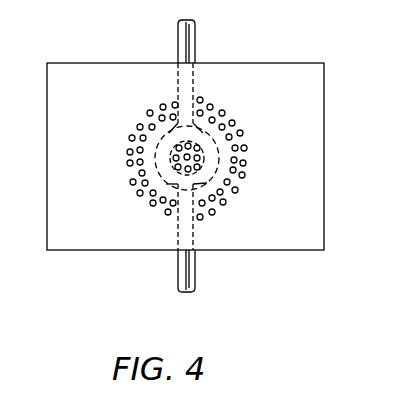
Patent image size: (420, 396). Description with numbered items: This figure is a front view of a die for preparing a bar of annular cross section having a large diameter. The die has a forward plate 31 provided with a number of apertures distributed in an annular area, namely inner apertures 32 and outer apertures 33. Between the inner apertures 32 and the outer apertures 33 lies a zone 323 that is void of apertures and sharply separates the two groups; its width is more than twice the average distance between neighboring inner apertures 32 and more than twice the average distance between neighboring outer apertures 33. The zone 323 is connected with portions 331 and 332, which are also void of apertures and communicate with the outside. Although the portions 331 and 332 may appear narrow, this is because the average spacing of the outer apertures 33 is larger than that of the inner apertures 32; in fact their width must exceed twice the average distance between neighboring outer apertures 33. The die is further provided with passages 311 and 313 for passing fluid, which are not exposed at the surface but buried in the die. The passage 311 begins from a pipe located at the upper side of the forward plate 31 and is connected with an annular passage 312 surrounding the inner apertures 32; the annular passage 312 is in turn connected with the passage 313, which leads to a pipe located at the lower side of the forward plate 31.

The forward plate 31 is at (272, 70).
The passage 311 is at (193, 60).
The passage 313 is at (188, 235).
The portion void of apertures 331 is at (188, 110).
The portion void of apertures 332 is at (182, 210).
The inner apertures 32 is at (197, 140).
The outer apertures 33 is at (139, 124).
The annular passage 312 is at (141, 175).
The zone void of apertures 323 is at (161, 195).